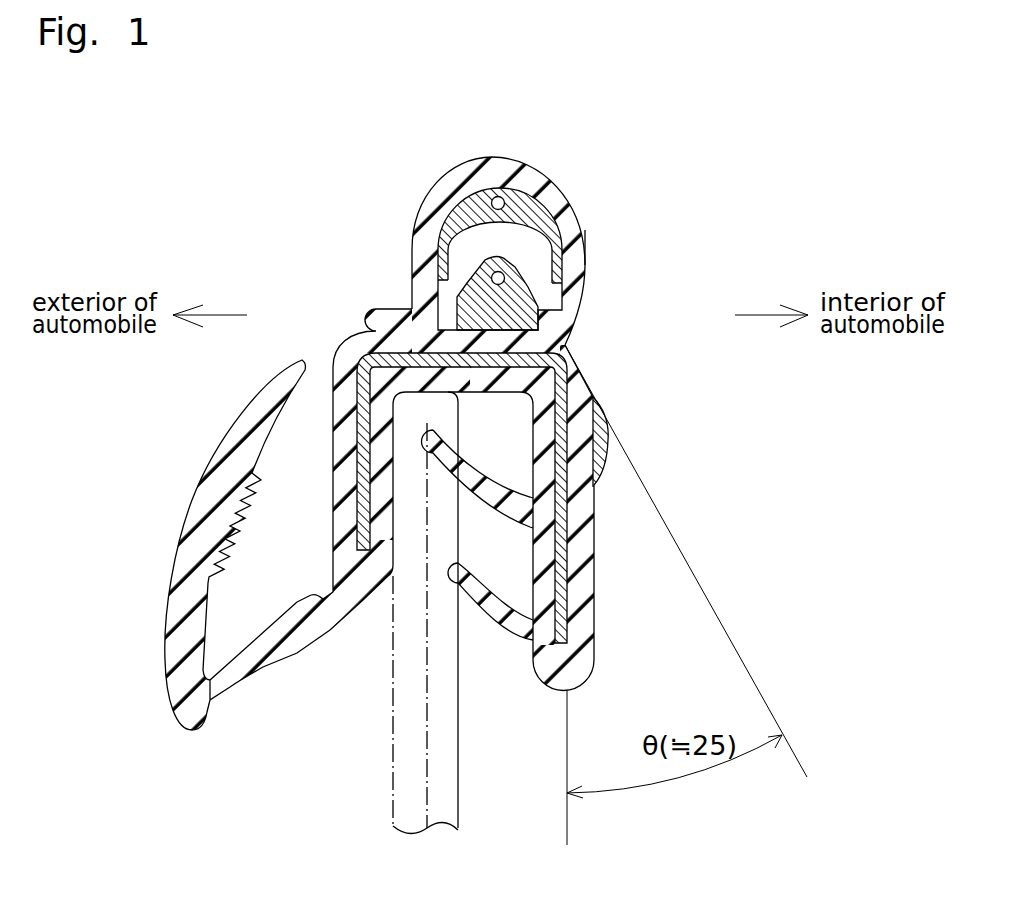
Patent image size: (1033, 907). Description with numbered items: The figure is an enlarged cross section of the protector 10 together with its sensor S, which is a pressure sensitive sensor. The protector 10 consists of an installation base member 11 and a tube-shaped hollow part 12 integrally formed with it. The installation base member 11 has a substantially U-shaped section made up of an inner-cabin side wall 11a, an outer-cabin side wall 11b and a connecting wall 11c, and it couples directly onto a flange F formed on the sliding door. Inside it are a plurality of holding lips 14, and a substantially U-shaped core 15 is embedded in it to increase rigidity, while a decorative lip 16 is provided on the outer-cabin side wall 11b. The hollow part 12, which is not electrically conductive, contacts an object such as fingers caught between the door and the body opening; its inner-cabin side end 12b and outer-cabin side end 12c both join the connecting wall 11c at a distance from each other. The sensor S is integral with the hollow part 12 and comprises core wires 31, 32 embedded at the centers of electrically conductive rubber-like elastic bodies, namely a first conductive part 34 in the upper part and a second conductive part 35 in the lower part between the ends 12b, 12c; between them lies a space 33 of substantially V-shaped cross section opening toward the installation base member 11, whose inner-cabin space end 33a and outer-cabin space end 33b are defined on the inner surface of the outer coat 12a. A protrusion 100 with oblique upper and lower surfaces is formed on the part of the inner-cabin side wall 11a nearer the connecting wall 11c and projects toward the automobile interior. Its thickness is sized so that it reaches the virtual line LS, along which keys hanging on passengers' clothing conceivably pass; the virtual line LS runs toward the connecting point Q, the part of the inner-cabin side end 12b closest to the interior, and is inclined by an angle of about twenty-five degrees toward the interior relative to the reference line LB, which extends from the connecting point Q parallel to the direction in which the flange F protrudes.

The protector 10 is at (688, 217).
The installation base member 11 is at (594, 573).
The inner-cabin side wall 11a is at (607, 465).
The outer-cabin side wall 11b is at (333, 467).
The connecting wall 11c is at (473, 386).
The hollow part 12 is at (532, 175).
The outer coat 12a is at (557, 198).
The inner-cabin side end 12b is at (557, 340).
The outer-cabin side end 12c is at (420, 323).
The holding lips 14 is at (445, 478).
The core 15 is at (333, 423).
The decorative lip 16 is at (198, 477).
The core wire 31 is at (547, 182).
The core wire 32 is at (506, 276).
The space 33 is at (441, 290).
The inner-cabin space end 33a is at (541, 304).
The outer-cabin space end 33b is at (437, 301).
The first conductive part 34 is at (472, 208).
The second conductive part 35 is at (516, 300).
The protrusion 100 is at (628, 445).
The sensor S is at (488, 197).
The connecting point Q is at (568, 346).
The flange F is at (393, 773).
The virtual line LS is at (790, 757).
The reference line LB is at (568, 823).